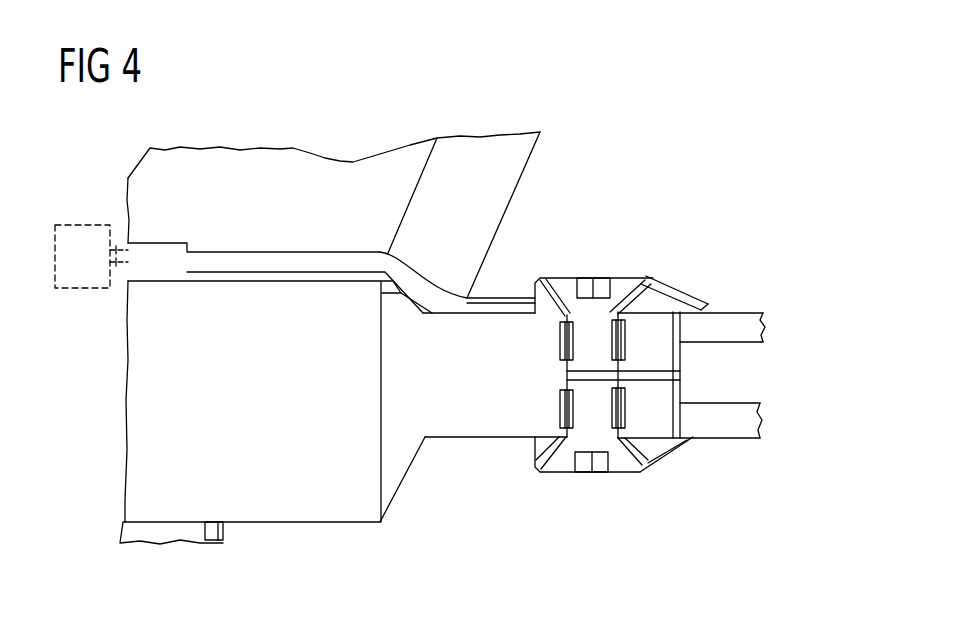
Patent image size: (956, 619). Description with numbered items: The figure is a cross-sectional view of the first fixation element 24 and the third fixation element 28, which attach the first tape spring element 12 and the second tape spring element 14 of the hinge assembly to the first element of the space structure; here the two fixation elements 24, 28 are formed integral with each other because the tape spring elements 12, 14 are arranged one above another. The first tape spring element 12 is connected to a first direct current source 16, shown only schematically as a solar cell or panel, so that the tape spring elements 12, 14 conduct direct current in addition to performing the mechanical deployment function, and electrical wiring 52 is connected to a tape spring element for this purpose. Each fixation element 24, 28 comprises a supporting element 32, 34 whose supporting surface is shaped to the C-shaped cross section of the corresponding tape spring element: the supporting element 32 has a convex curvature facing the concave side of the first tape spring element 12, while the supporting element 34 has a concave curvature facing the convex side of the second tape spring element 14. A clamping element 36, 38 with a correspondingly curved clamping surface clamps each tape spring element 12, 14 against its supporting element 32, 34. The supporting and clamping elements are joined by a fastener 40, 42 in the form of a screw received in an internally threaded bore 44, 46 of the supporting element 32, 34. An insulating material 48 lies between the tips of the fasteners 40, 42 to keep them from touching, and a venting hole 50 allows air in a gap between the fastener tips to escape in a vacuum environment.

The first tape spring element 12 is at (753, 322).
The second tape spring element 14 is at (752, 418).
The first direct current source 16 is at (86, 230).
The first fixation element 24 is at (688, 275).
The third fixation element 28 is at (527, 480).
The supporting element 32 is at (693, 312).
The supporting element 34 is at (662, 418).
The clamping element 36 is at (548, 275).
The clamping element 38 is at (650, 452).
The fastener 40 is at (612, 310).
The fastener 42 is at (616, 450).
The bore 44 is at (560, 333).
The bore 46 is at (560, 397).
The insulating material 48 is at (588, 370).
The venting hole 50 is at (672, 373).
The electrical wiring 52 is at (253, 267).